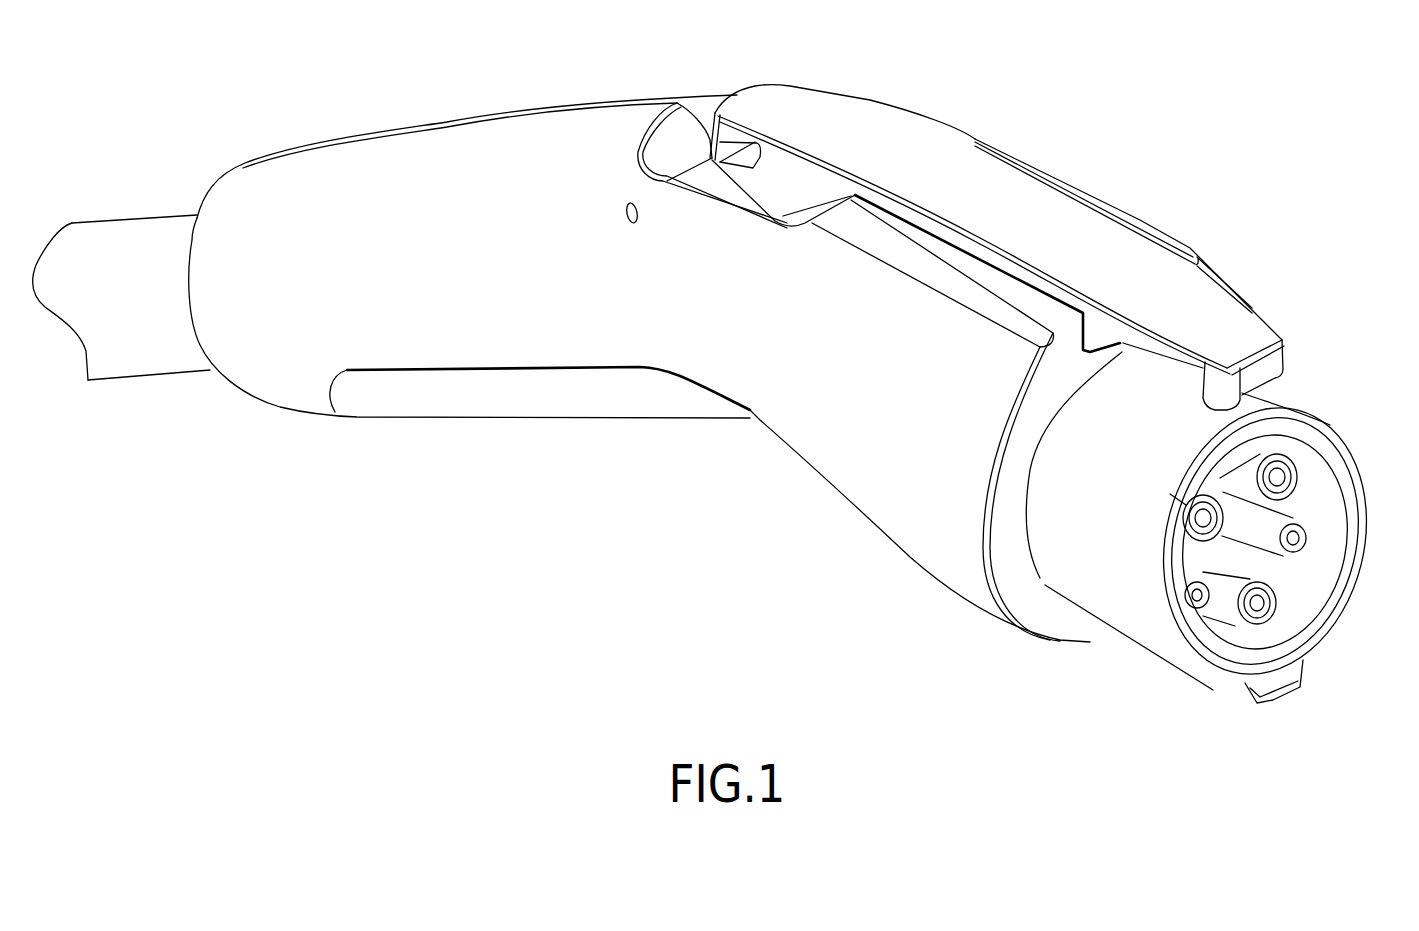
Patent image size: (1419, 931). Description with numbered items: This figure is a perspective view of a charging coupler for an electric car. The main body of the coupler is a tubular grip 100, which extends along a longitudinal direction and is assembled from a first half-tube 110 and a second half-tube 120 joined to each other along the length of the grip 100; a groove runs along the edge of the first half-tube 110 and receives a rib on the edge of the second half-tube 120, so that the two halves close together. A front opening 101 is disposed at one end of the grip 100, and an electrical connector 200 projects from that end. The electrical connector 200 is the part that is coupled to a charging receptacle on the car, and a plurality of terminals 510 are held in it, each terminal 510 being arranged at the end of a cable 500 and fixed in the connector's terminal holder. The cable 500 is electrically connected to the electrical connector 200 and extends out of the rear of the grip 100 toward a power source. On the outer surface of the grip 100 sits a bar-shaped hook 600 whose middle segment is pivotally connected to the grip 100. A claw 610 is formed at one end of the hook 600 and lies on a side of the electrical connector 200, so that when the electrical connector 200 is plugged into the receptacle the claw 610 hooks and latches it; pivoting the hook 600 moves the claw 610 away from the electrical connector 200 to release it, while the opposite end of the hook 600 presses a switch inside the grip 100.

The grip 100 is at (915, 65).
The first half-tube 110 is at (883, 290).
The second half-tube 120 is at (1060, 176).
The front opening 101 is at (1035, 573).
The electrical connector 200 is at (1216, 519).
The cable 500 is at (138, 230).
The terminal 510 is at (1280, 470).
The hook 600 is at (1129, 274).
The claw 610 is at (1213, 393).